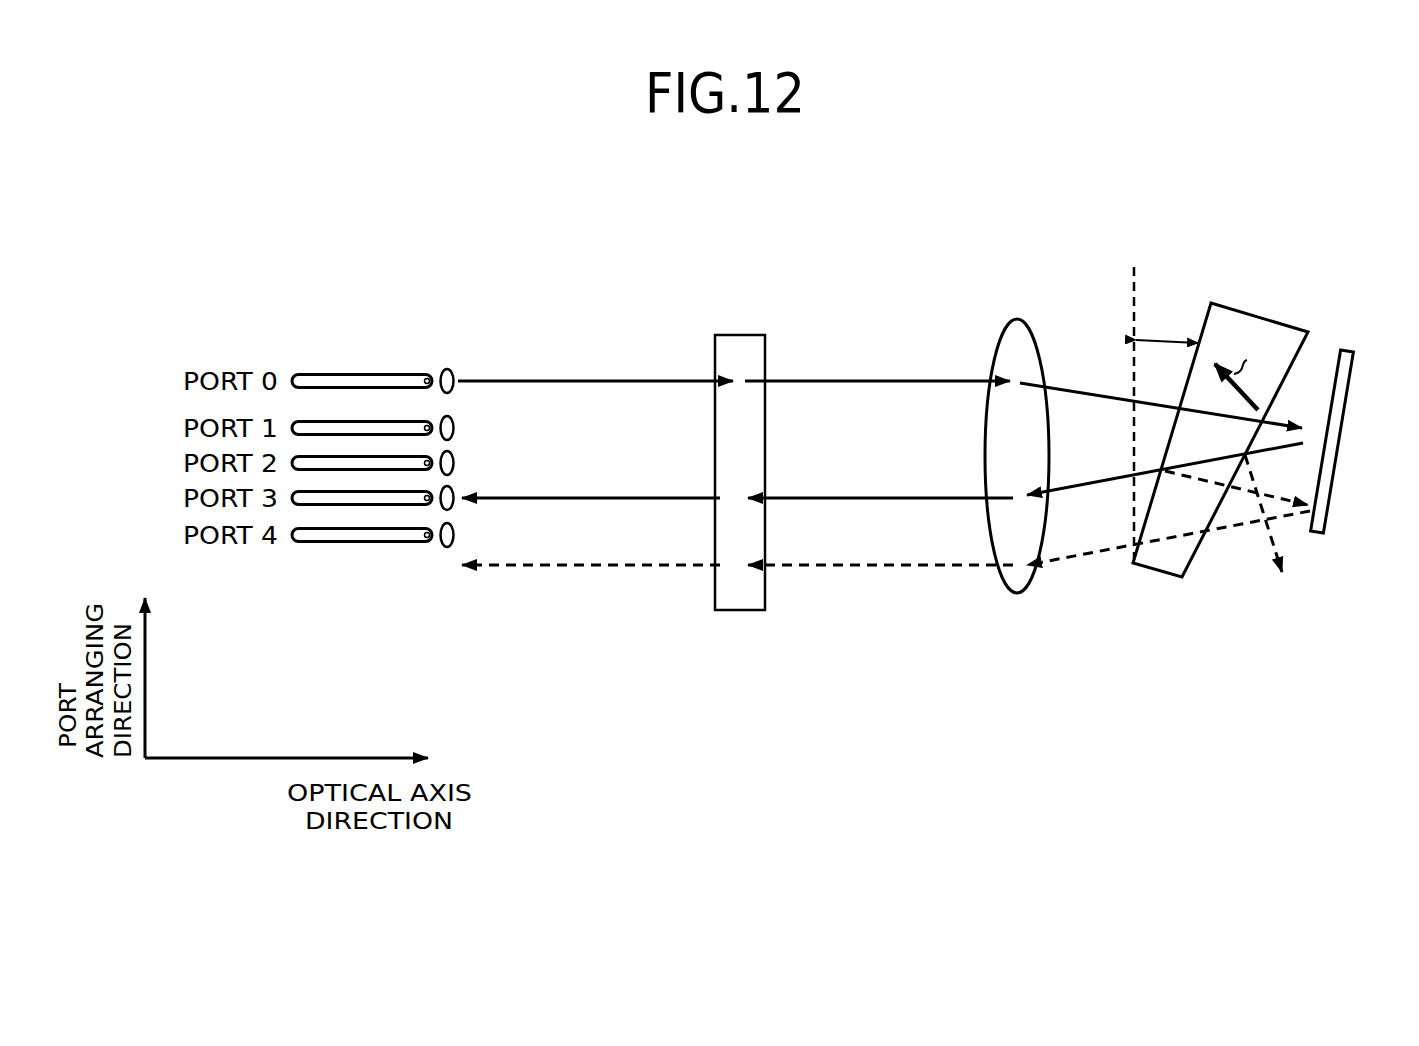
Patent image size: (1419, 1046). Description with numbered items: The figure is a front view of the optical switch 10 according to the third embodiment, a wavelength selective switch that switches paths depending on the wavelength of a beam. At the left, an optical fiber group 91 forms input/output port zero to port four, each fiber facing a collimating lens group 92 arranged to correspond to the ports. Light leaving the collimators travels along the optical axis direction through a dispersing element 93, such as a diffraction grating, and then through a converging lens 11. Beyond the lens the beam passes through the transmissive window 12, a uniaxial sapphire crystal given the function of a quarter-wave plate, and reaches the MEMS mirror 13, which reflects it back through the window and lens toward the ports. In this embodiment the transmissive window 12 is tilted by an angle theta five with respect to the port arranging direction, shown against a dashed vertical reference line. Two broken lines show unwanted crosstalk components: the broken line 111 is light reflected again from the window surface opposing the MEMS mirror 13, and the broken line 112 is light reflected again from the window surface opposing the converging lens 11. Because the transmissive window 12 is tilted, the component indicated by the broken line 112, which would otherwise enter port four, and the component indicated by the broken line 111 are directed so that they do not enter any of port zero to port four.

The optical switch 10 is at (924, 398).
The converging lens 11 is at (1027, 326).
The transmissive window 12 is at (1260, 313).
The MEMS mirror 13 is at (1352, 350).
The optical fiber group 91 is at (367, 362).
The collimating lens group 92 is at (458, 362).
The dispersing element 93 is at (745, 335).
The broken line 111 is at (1273, 537).
The broken line 112 is at (1080, 556).